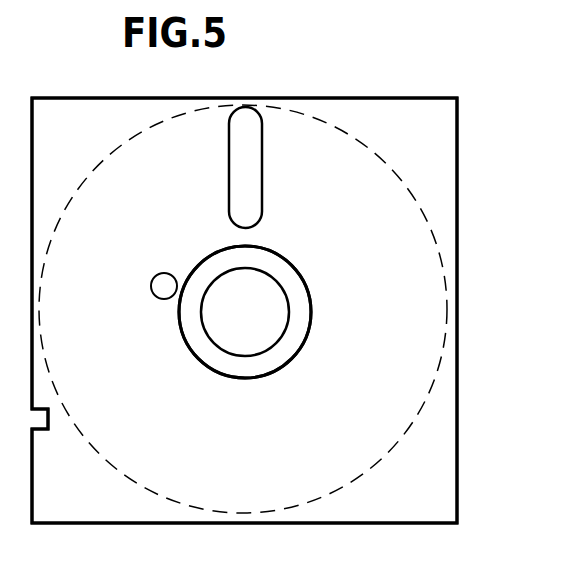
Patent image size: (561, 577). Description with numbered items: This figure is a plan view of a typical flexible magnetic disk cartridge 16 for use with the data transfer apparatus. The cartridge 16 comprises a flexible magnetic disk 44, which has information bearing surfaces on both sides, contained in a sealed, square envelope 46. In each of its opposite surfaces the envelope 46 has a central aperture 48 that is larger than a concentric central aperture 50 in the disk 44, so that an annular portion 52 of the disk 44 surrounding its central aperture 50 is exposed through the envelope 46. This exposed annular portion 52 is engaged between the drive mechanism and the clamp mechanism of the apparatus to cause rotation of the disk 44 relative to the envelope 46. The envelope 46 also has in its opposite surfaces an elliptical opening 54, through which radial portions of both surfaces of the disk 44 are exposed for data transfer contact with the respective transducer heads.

The flexible magnetic disk cartridge 16 is at (414, 97).
The flexible magnetic disk 44 is at (368, 150).
The envelope 46 is at (452, 167).
The central aperture 48 is at (205, 262).
The central aperture 50 is at (280, 302).
The annular portion 52 is at (297, 339).
The elliptical opening 54 is at (255, 168).